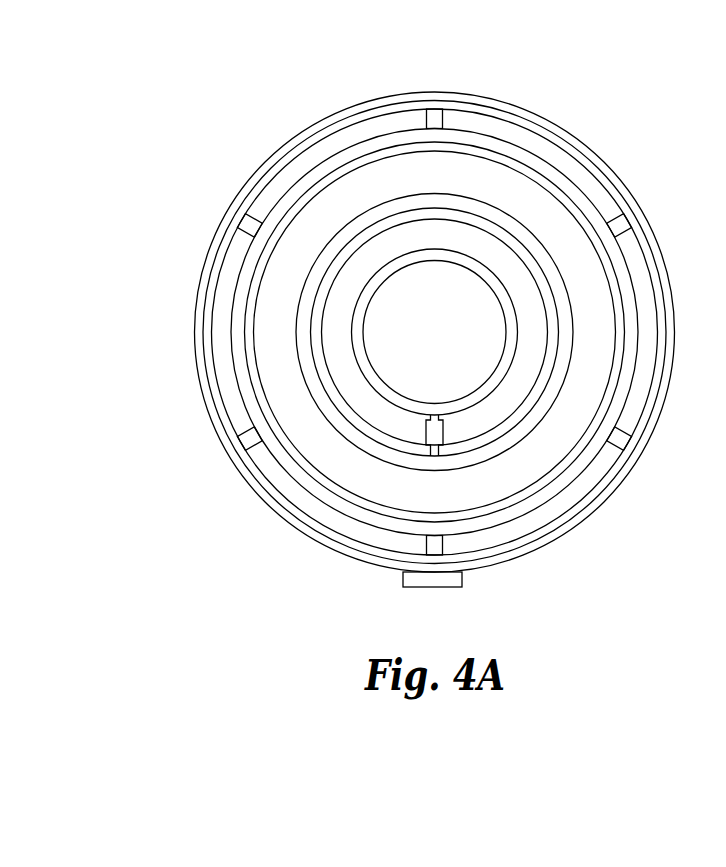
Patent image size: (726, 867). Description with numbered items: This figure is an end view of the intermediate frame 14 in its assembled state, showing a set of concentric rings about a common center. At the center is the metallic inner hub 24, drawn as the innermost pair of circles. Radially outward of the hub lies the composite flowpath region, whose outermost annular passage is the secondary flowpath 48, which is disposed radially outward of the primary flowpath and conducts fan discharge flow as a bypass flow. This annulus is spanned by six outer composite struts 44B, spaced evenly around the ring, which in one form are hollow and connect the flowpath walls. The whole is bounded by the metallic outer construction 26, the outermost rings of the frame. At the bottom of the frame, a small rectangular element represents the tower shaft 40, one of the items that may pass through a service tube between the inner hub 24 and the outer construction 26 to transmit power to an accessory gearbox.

The intermediate frame 14 is at (258, 97).
The metallic outer construction 26 is at (618, 175).
The secondary flowpath 48 is at (468, 120).
The outer composite struts 44B is at (257, 444).
The metallic inner hub 24 is at (391, 274).
The tower shaft 40 is at (436, 588).